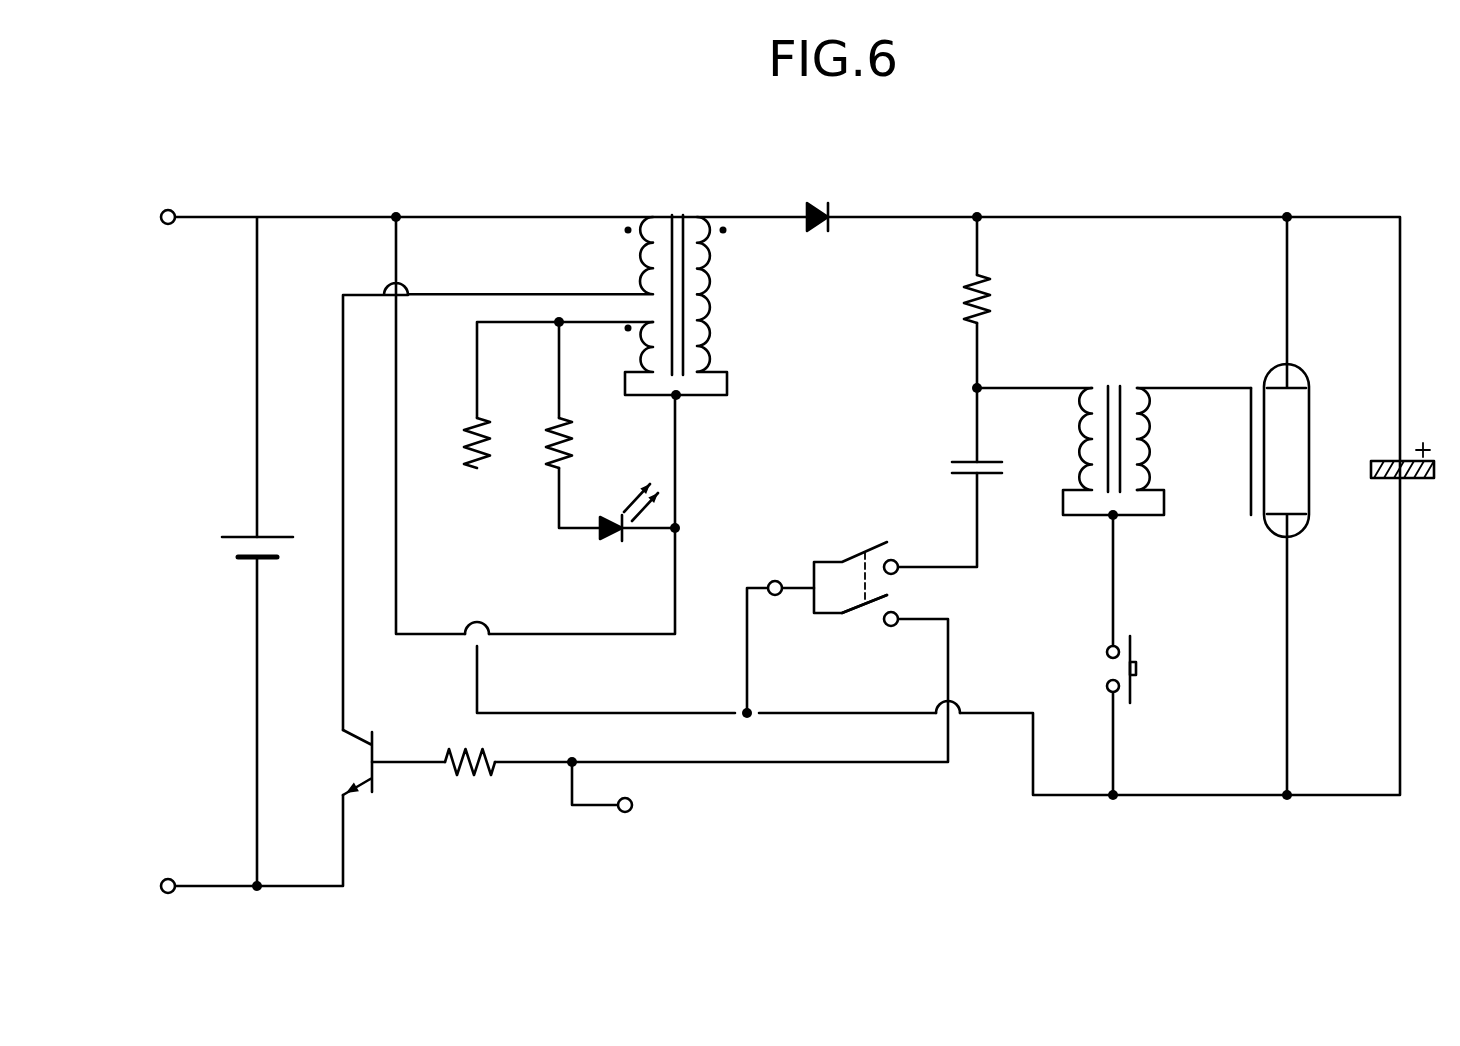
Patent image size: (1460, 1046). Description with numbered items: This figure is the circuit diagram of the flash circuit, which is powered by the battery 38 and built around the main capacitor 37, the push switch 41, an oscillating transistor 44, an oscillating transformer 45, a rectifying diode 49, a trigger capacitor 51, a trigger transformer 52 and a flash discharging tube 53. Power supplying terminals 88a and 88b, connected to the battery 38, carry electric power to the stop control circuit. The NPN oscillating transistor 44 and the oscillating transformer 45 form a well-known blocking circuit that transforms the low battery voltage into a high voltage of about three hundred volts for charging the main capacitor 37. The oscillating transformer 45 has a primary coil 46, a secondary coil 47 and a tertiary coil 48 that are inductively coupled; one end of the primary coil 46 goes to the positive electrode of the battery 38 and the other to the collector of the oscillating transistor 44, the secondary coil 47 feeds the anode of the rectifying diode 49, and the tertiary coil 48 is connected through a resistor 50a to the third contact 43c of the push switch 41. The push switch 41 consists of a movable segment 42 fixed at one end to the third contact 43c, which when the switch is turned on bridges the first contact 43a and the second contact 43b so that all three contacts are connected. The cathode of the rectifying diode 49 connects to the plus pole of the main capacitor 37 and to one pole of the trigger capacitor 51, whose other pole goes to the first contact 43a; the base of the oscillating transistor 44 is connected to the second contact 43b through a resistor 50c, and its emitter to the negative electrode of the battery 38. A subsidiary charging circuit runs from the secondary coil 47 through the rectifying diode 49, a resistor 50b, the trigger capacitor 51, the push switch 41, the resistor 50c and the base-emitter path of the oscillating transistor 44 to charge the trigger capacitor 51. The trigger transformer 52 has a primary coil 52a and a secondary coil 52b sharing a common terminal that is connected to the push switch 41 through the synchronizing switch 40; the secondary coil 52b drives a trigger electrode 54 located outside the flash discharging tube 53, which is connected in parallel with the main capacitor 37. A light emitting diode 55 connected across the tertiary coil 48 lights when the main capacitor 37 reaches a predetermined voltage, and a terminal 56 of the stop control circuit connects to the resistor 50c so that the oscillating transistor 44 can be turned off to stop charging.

The main capacitor 37 is at (1421, 482).
The battery 38 is at (290, 537).
The synchronizing switch 40 is at (1130, 690).
The push switch 41 is at (830, 542).
The movable segment 42 is at (850, 615).
The first contact 43a is at (897, 558).
The second contact 43b is at (891, 627).
The third contact 43c is at (775, 580).
The oscillating transistor 44 is at (375, 788).
The oscillating transformer 45 is at (686, 200).
The primary coil 46 is at (640, 262).
The secondary coil 47 is at (712, 330).
The tertiary coil 48 is at (643, 358).
The rectifying diode 49 is at (831, 204).
The resistor 50a is at (470, 428).
The resistor 50b is at (967, 300).
The resistor 50c is at (497, 770).
The trigger capacitor 51 is at (960, 460).
The trigger transformer 52 is at (1110, 372).
The primary coil 52a is at (1088, 452).
The secondary coil 52b is at (1142, 452).
The flash discharging tube 53 is at (1309, 491).
The trigger electrode 54 is at (1251, 491).
The light emitting diode 55 is at (622, 538).
The terminal 56 is at (633, 808).
The power supplying terminal 88a is at (168, 210).
The power supplying terminal 88b is at (168, 879).